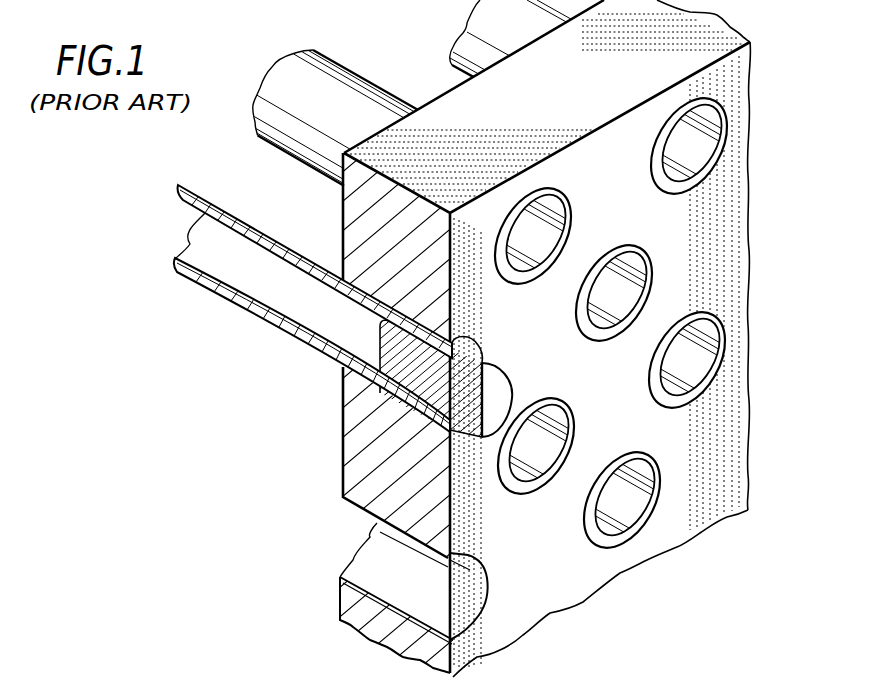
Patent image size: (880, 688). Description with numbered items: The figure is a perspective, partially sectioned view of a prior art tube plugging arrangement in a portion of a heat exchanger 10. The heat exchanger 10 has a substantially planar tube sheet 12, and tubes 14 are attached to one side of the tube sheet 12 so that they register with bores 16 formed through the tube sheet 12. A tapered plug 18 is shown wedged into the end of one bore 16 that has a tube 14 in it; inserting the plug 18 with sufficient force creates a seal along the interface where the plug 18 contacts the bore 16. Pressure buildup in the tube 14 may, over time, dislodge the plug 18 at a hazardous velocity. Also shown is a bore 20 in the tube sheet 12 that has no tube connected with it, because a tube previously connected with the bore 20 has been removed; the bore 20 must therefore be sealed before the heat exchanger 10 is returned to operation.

The heat exchanger 10 is at (780, 370).
The tube sheet 12 is at (733, 215).
The tubes 14 is at (370, 82).
The bores 16 is at (663, 483).
The tapered plug 18 is at (500, 368).
The bore 20 is at (474, 576).